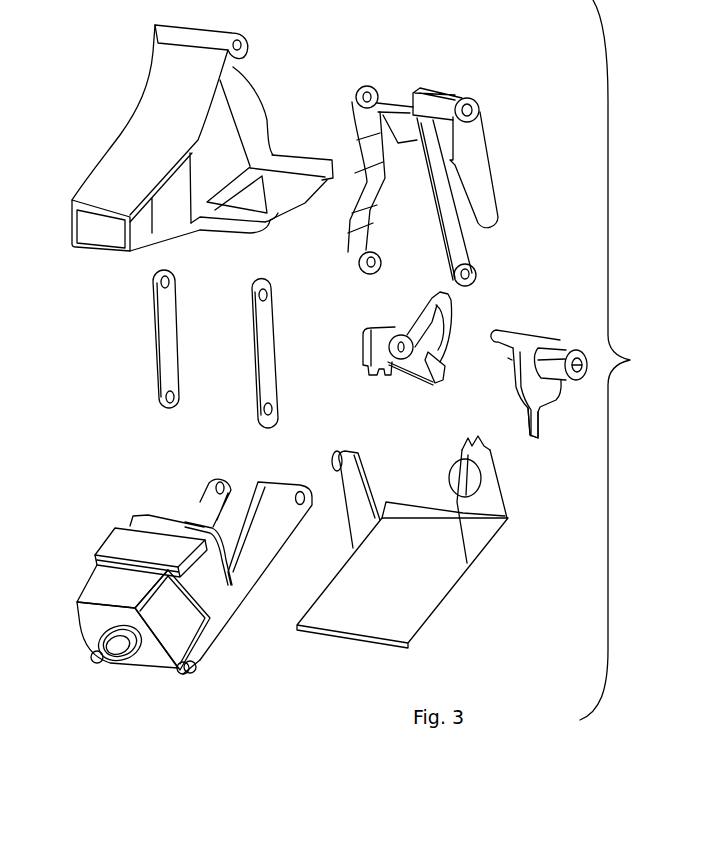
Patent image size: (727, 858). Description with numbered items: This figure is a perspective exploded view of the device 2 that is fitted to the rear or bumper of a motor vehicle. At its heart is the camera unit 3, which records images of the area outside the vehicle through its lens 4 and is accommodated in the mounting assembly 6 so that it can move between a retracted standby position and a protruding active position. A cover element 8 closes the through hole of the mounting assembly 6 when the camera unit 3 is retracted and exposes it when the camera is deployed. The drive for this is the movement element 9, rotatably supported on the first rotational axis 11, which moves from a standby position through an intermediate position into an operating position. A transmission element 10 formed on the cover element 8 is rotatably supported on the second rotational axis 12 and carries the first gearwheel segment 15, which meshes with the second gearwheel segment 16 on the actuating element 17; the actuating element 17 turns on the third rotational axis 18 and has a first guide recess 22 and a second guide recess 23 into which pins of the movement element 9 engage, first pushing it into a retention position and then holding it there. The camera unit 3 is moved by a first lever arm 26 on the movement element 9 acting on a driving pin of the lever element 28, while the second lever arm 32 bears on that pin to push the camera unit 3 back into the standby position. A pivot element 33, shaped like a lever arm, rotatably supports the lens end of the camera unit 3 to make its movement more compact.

The device 2 is at (614, 360).
The camera unit 3 is at (105, 577).
The lens 4 is at (130, 658).
The mounting assembly 6 is at (97, 190).
The cover element 8 is at (430, 608).
The movement element 9 is at (548, 345).
The transmission element 10 is at (478, 524).
The first rotational axis 11 is at (577, 366).
The second rotational axis 12 is at (453, 485).
The first gearwheel segment 15 is at (468, 430).
The second gearwheel segment 16 is at (370, 393).
The actuating element 17 is at (399, 318).
The third rotational axis 18 is at (402, 360).
The first guide recess 22 is at (437, 372).
The second guide recess 23 is at (449, 305).
The first lever arm 26 is at (495, 330).
The lever element 28 is at (434, 82).
The second lever arm 32 is at (535, 437).
The pivot element 33 is at (265, 337).